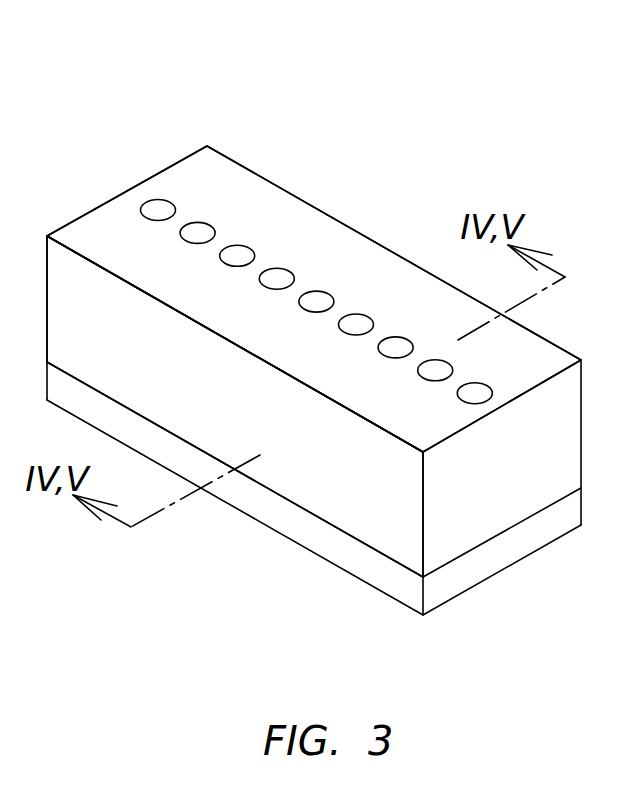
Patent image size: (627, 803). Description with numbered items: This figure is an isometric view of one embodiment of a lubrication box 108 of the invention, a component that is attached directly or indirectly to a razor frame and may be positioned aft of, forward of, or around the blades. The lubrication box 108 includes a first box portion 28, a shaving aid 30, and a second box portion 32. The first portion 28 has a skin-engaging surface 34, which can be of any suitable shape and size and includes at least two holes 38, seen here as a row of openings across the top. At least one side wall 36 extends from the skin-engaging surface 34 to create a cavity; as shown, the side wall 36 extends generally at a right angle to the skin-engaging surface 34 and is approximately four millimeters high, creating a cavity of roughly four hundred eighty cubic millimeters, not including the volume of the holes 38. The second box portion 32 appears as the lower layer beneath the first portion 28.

The lubrication box 108 is at (186, 118).
The first box portion 28 is at (162, 172).
The shaving aid 30 is at (234, 251).
The second box portion 32 is at (490, 578).
The skin-engaging surface 34 is at (322, 237).
The side wall 36 is at (390, 517).
The holes 38 is at (158, 200).